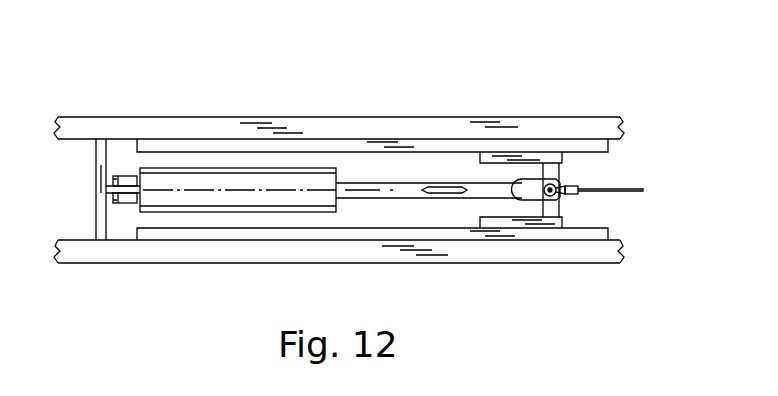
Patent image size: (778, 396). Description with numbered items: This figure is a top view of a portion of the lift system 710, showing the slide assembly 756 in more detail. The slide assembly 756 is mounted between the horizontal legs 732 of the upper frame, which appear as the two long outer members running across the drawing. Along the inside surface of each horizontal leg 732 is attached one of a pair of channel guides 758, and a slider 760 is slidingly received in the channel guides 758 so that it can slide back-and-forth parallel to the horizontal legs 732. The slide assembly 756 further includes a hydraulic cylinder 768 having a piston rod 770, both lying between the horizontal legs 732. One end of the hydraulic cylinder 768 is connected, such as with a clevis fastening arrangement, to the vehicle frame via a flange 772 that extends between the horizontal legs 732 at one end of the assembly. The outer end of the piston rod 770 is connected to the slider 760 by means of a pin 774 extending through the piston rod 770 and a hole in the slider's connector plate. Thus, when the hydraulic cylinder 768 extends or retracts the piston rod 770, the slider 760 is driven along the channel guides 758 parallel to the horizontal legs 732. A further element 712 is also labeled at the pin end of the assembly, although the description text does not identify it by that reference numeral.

The lift system 710 is at (303, 117).
The cable 712 is at (632, 188).
The horizontal legs 732 is at (458, 125).
The slide assembly 756 is at (582, 253).
The channel guides 758 is at (173, 151).
The slider 760 is at (548, 158).
The hydraulic cylinder 768 is at (168, 202).
The piston rod 770 is at (360, 190).
The flange 772 is at (96, 185).
The pin 774 is at (556, 184).